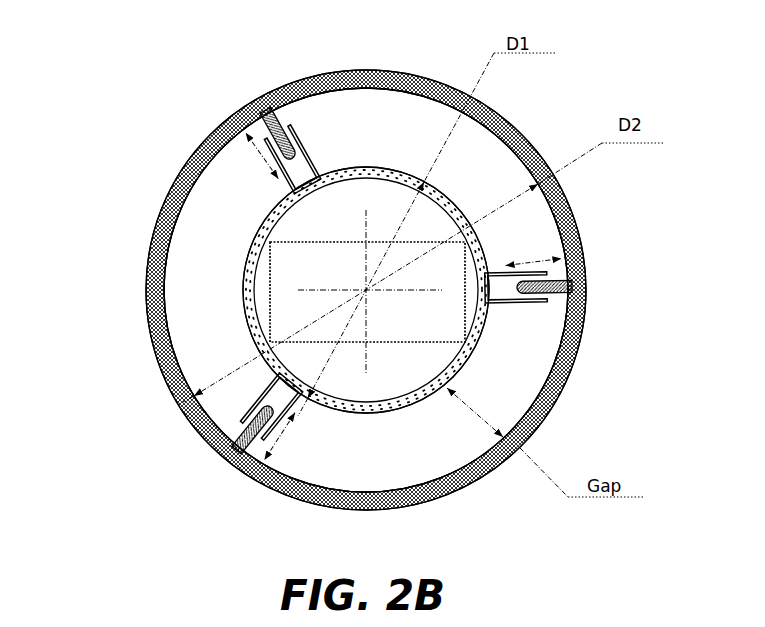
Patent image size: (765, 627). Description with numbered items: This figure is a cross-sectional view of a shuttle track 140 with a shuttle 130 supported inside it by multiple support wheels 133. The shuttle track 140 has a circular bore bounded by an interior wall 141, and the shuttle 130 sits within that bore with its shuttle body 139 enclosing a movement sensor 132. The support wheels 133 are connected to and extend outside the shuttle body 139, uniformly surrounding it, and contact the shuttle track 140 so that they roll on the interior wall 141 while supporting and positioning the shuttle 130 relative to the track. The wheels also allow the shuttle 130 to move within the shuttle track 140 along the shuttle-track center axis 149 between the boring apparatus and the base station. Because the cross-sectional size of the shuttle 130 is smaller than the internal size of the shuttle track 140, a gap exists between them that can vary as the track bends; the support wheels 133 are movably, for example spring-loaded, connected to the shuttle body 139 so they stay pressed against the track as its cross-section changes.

The shuttle 130 is at (243, 280).
The movement sensor 132 is at (332, 250).
The support wheels 133 is at (283, 123).
The shuttle body 139 is at (405, 172).
The shuttle track 140 is at (175, 180).
The interior wall 141 is at (211, 164).
The shuttle-track center axis 149 is at (366, 290).